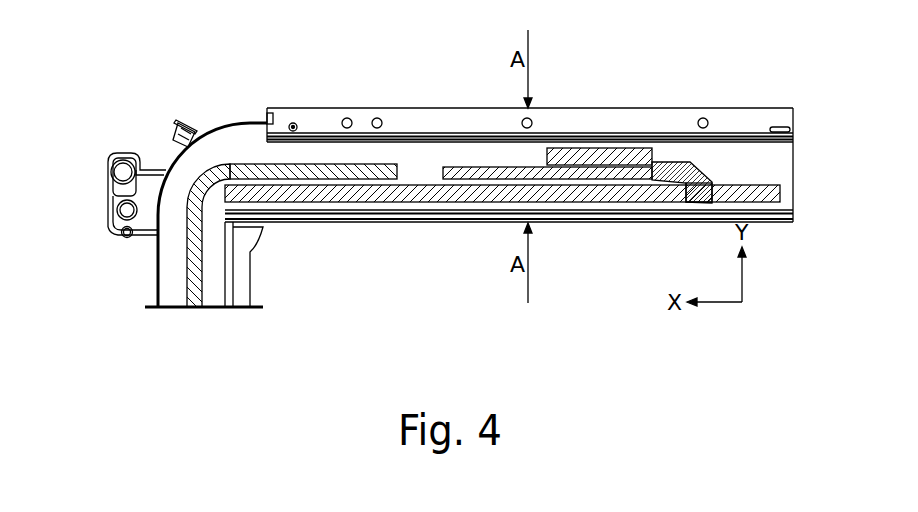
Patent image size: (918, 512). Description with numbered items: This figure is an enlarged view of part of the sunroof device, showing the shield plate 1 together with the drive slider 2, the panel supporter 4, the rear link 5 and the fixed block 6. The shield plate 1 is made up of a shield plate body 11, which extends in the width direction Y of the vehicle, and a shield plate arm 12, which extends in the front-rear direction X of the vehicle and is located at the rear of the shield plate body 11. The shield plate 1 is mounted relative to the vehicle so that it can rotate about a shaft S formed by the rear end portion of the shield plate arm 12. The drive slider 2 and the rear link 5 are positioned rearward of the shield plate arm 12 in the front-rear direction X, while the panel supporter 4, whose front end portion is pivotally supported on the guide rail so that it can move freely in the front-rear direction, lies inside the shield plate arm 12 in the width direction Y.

The shield plate 1 is at (203, 162).
The shield plate body 11 is at (187, 258).
The shield plate arm 12 is at (300, 163).
The drive slider 2 is at (474, 167).
The panel supporter 4 is at (303, 197).
The rear link 5 is at (663, 162).
The fixed block 6 is at (598, 148).
The shaft S is at (377, 163).